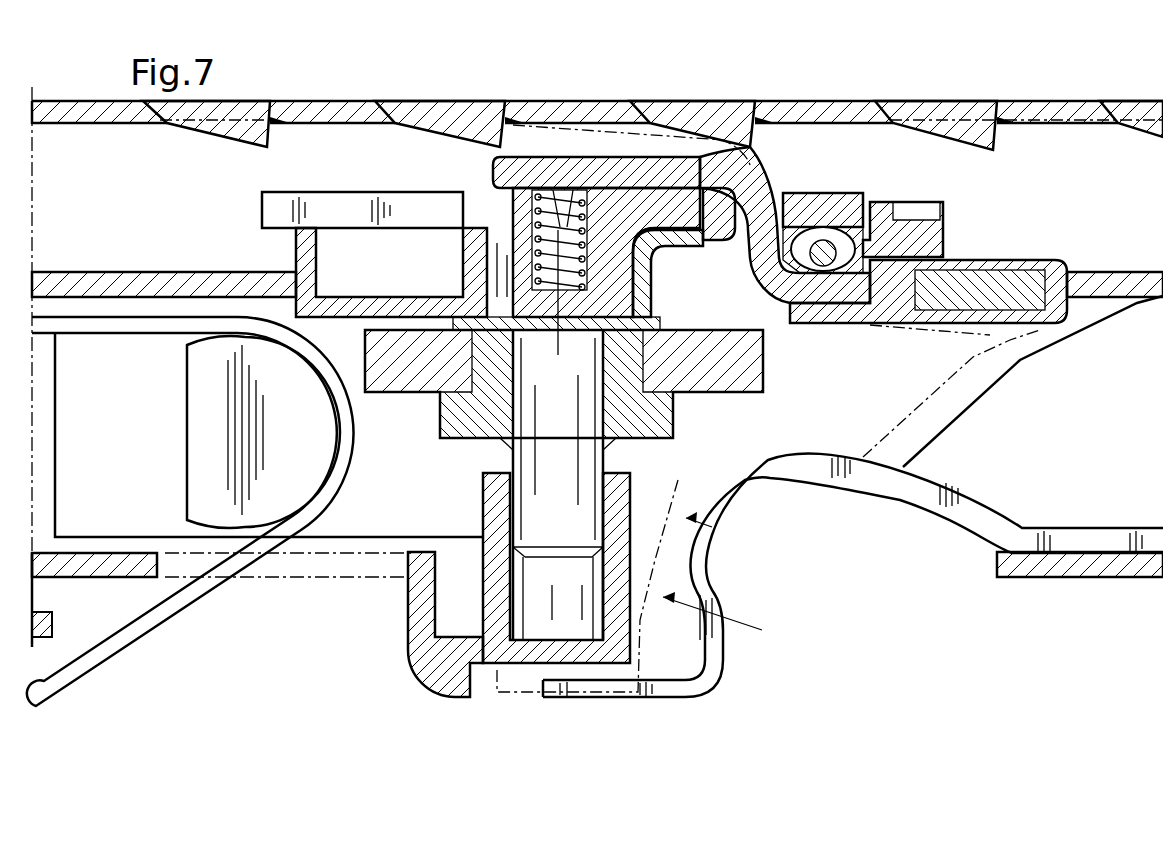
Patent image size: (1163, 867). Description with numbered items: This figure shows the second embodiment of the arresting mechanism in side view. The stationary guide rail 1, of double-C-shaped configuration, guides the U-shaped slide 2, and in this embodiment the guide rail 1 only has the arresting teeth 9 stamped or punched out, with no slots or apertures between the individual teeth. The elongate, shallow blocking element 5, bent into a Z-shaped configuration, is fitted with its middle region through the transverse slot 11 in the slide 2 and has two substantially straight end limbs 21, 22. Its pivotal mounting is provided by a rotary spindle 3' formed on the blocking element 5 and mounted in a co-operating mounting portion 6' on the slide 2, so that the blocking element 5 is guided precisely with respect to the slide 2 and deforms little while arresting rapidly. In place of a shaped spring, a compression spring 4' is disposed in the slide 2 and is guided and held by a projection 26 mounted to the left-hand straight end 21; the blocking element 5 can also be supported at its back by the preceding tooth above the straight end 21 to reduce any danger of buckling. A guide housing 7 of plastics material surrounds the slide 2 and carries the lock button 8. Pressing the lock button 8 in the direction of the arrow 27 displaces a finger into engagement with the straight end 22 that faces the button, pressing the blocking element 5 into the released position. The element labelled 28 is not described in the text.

The stationary guide rail 1 is at (108, 106).
The slide 2 is at (272, 212).
The rotary spindle 3' is at (844, 162).
The compression spring 4' is at (591, 207).
The blocking element 5 is at (762, 160).
The mounting portion 6' is at (903, 158).
The guide housing 7 is at (347, 300).
The lock button 8 is at (705, 660).
The arresting teeth 9 is at (244, 130).
The transverse slot 11 is at (788, 240).
The straight end limb 21 is at (508, 165).
The straight end limb 22 is at (1023, 290).
The projection 26 is at (573, 195).
The arrow 27 is at (700, 609).
The wall segment 28 is at (1143, 300).